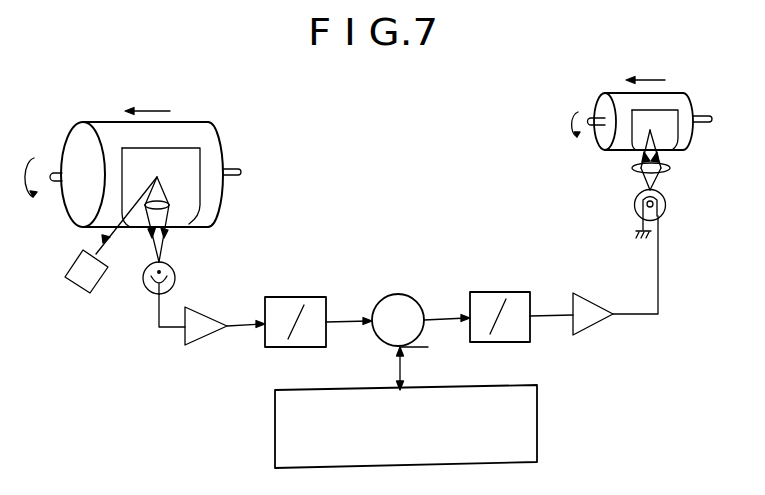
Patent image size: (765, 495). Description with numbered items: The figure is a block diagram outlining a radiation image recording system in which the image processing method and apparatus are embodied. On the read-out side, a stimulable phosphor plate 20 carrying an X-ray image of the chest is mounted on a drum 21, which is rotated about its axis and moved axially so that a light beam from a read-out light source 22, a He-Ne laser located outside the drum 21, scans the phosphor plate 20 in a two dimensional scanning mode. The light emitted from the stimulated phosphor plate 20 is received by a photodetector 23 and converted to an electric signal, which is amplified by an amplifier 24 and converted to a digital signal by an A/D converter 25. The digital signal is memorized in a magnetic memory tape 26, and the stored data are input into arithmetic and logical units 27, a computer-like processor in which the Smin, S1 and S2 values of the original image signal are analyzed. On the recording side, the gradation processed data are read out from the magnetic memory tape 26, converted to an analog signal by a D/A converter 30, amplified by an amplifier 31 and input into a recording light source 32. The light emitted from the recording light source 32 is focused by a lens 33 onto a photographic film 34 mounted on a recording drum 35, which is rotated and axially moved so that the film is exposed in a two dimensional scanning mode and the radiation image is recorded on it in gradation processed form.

The stimulable phosphor plate 20 is at (185, 198).
The drum 21 is at (208, 147).
The read-out light source 22 is at (97, 287).
The photodetector 23 is at (176, 271).
The amplifier 24 is at (208, 336).
The A/D converter 25 is at (308, 297).
The magnetic memory tape 26 is at (415, 298).
The arithmetic and logical units 27 is at (537, 408).
The D/A converter 30 is at (512, 292).
The amplifier 31 is at (600, 322).
The recording light source 32 is at (666, 207).
The lens 33 is at (633, 168).
The photographic film 34 is at (668, 133).
The recording drum 35 is at (683, 105).